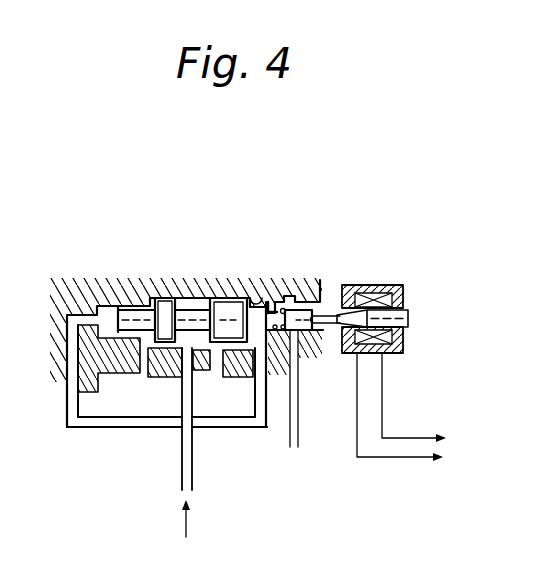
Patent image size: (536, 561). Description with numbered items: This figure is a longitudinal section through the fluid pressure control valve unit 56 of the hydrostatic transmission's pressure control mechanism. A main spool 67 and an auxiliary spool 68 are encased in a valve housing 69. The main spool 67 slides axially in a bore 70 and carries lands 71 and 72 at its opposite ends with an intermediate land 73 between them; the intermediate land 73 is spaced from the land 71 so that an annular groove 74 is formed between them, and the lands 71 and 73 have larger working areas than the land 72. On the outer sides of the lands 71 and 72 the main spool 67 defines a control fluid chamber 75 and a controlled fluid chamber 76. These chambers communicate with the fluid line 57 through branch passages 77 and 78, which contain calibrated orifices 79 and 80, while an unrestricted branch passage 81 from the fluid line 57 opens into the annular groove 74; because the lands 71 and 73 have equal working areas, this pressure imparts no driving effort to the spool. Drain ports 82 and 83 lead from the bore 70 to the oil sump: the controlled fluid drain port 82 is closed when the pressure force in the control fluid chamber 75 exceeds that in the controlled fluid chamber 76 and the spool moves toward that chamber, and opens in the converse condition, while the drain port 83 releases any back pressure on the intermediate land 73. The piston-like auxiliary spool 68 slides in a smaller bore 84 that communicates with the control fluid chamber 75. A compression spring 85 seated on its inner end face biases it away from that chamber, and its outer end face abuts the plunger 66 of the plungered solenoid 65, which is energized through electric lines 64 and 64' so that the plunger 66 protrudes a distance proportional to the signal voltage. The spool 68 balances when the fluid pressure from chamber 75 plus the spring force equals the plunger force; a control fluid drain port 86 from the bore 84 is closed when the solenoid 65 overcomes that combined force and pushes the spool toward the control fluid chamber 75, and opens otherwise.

The fluid pressure control valve unit 56 is at (214, 237).
The fluid line 57 is at (182, 486).
The electric line 64 is at (414, 397).
The electric line 64' is at (400, 430).
The plungered solenoid 65 is at (386, 283).
The combination armature and plunger 66 is at (331, 332).
The main spool 67 is at (185, 310).
The auxiliary spool 68 is at (318, 302).
The valve housing 69 is at (80, 296).
The bore 70 is at (265, 297).
The land 71 is at (215, 298).
The land 72 is at (120, 312).
The intermediate land 73 is at (162, 298).
The annular groove 74 is at (157, 372).
The control fluid chamber 75 is at (267, 427).
The controlled fluid chamber 76 is at (108, 348).
The branch passage 77 is at (249, 427).
The branch passage 78 is at (80, 427).
The calibrated restriction or orifice 79 is at (225, 427).
The calibrated restriction or orifice 80 is at (122, 427).
The unrestricted branch passage 81 is at (179, 428).
The controlled fluid drain port 82 is at (208, 362).
The drain port 83 is at (134, 380).
The bore 84 is at (320, 308).
The compression spring 85 is at (287, 296).
The control fluid drain port 86 is at (302, 340).